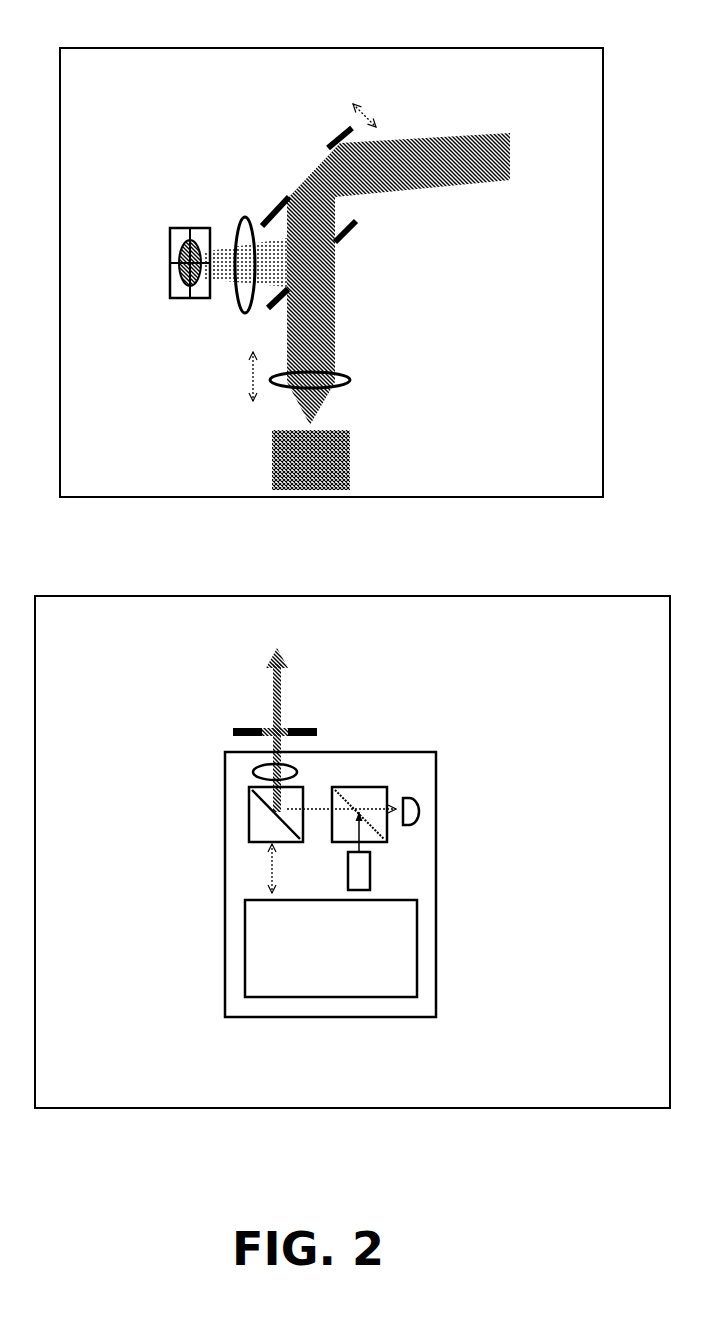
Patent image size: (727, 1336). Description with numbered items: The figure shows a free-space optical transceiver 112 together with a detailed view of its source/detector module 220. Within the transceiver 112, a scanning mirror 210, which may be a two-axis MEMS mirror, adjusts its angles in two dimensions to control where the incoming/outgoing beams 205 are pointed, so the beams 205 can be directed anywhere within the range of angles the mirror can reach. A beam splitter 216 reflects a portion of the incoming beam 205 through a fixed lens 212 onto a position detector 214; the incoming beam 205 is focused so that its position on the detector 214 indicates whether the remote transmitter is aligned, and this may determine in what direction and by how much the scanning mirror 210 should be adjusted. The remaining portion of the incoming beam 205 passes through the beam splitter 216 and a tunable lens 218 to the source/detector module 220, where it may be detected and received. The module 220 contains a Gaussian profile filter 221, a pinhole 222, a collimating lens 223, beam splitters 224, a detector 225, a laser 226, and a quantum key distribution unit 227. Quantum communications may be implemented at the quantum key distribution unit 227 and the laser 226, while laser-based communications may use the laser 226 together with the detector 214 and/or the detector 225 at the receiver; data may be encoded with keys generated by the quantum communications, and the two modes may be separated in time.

The free-space optical transceiver 112 is at (297, 46).
The incoming/outgoing beam 205 is at (442, 147).
The scanning mirror 210 is at (317, 135).
The fixed lens 212 is at (230, 308).
The detector 214 is at (185, 217).
The beam splitter 216 is at (357, 248).
The tunable lens 218 is at (358, 380).
The source/detector module 220 is at (359, 450).
The Gaussian profile filter 221 is at (420, 701).
The pinhole 222 is at (263, 743).
The collimating lens 223 is at (247, 772).
The beam splitters 224 is at (312, 785).
The detector 225 is at (424, 802).
The laser 226 is at (378, 863).
The quantum key distribution unit 227 is at (331, 948).